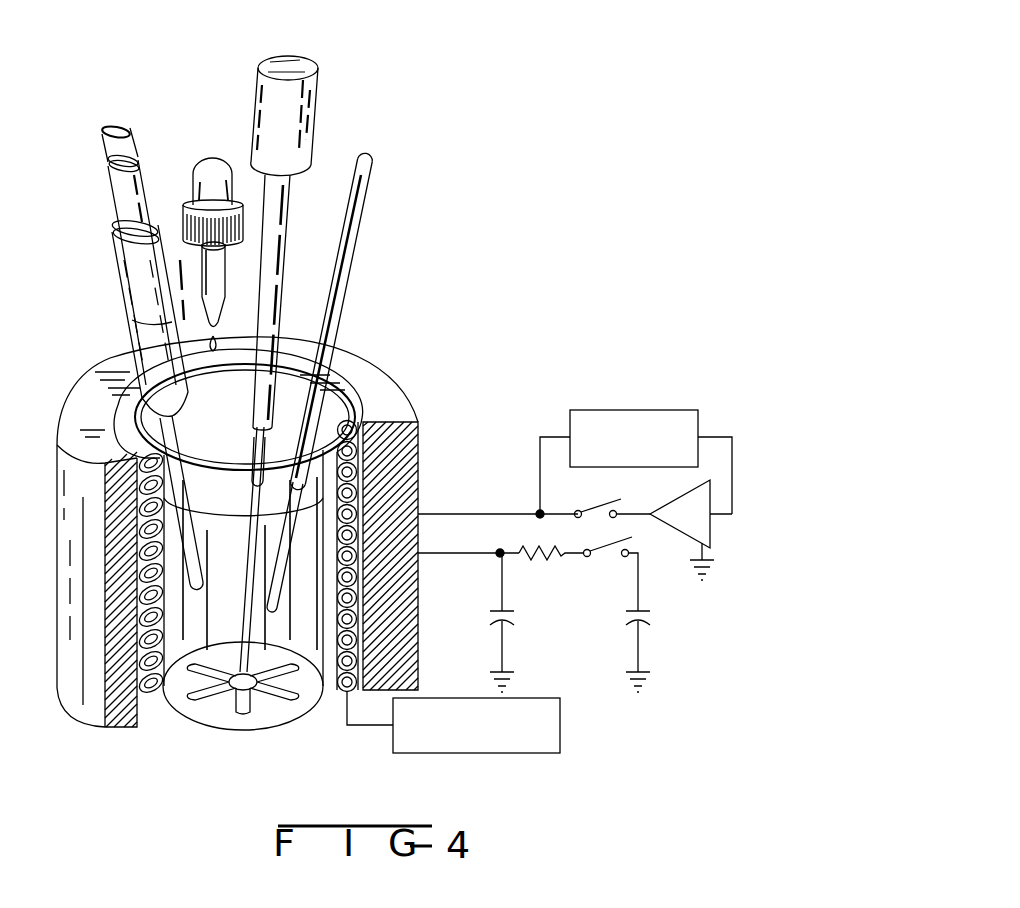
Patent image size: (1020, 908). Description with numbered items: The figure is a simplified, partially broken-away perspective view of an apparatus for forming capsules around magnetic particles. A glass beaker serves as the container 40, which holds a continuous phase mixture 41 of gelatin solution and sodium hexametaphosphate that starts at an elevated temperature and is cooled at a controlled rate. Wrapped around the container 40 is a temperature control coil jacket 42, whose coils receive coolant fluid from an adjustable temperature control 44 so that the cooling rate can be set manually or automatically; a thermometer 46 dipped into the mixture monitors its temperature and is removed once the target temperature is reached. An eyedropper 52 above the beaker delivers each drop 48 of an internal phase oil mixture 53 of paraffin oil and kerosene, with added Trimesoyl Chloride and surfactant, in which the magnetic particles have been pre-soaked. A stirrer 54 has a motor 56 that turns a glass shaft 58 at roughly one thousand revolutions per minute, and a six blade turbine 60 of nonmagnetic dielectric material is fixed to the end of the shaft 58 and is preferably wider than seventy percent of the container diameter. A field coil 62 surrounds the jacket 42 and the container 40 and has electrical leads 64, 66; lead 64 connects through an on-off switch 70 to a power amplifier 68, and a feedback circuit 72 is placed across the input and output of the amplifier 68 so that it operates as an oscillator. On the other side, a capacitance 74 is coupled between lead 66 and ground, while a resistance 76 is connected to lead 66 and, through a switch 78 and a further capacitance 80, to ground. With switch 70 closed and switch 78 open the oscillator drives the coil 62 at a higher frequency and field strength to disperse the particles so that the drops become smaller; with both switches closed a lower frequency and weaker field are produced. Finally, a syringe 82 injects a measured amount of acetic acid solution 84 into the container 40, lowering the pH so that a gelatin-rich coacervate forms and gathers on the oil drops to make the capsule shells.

The container 40 is at (240, 728).
The continuous phase mixture 41 is at (153, 700).
The temperature control coil jacket 42 is at (341, 693).
The temperature control 44 is at (560, 737).
The thermometer 46 is at (340, 293).
The drop 48 is at (215, 345).
The eyedropper 52 is at (190, 172).
The internal phase oil mixture 53 is at (219, 272).
The stirrer 54 is at (323, 84).
The motor 56 is at (262, 92).
The shaft 58 is at (258, 440).
The six blade turbine 60 is at (208, 664).
The field coil 62 is at (392, 418).
The electrical lead 64 is at (455, 514).
The electrical lead 66 is at (465, 553).
The power amplifier 68 is at (712, 530).
The on-off switch 70 is at (598, 505).
The feedback circuit 72 is at (570, 415).
The capacitance 74 is at (515, 617).
The resistance 76 is at (553, 560).
The switch 78 is at (603, 558).
The capacitance 80 is at (652, 617).
The syringe 82 is at (116, 262).
The acetic acid solution 84 is at (152, 345).